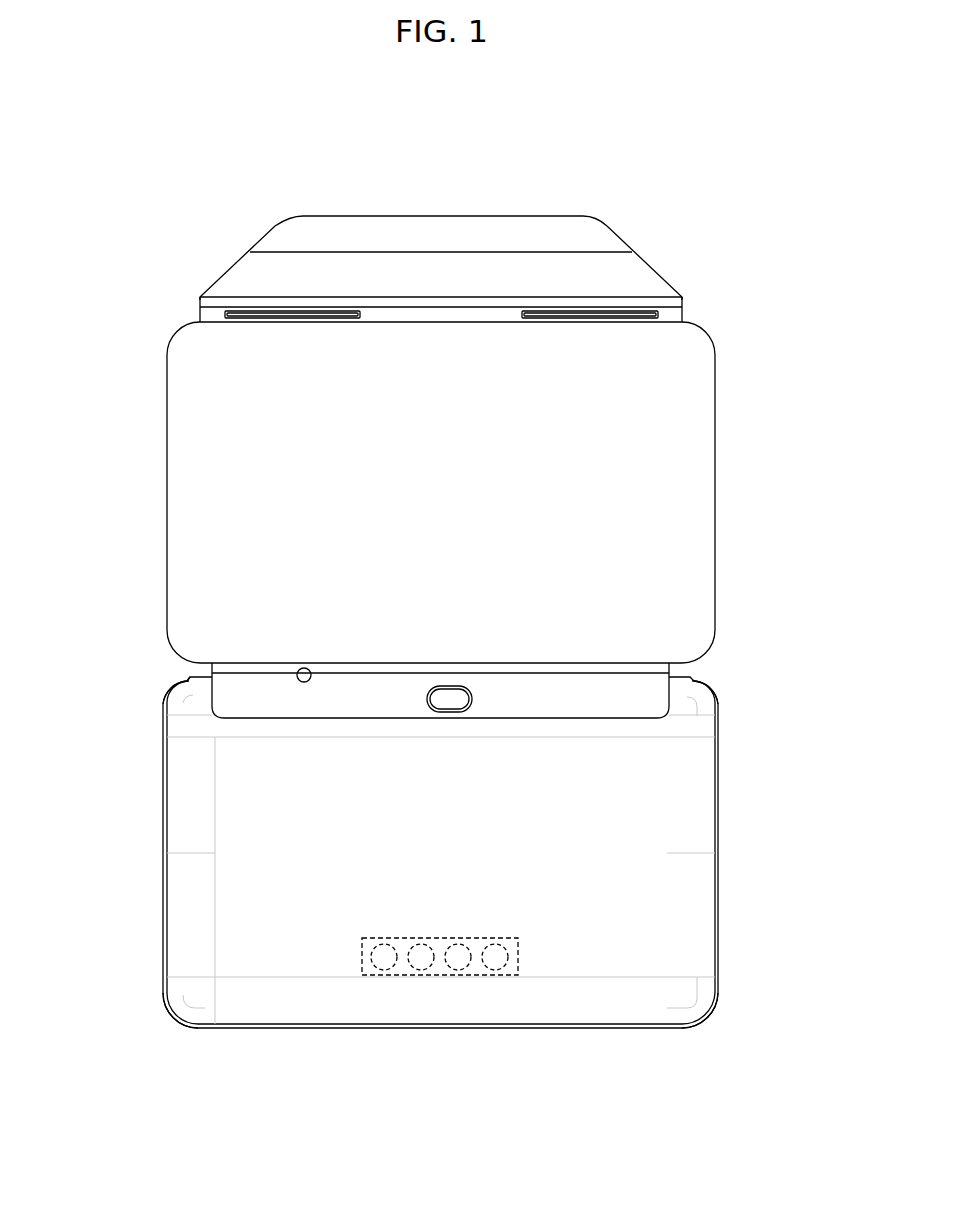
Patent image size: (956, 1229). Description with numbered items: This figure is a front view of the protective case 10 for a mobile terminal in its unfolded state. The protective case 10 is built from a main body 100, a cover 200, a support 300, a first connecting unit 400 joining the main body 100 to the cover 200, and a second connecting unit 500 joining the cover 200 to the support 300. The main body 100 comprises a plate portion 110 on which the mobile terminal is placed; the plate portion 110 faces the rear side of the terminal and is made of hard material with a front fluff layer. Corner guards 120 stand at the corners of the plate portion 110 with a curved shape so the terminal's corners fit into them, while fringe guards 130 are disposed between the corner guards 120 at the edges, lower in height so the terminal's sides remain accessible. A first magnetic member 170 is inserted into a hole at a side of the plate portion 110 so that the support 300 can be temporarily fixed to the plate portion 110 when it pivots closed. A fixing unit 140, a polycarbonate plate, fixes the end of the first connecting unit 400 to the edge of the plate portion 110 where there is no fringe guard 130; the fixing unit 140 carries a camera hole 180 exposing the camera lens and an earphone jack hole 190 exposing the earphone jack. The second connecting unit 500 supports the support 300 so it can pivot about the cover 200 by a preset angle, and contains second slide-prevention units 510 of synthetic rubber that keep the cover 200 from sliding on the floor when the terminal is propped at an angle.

The protective case 10 is at (563, 163).
The main body 100 is at (738, 777).
The plate portion 110 is at (637, 927).
The corner guards 120 is at (162, 682).
The fringe guards 130 is at (160, 843).
The fixing unit 140 is at (242, 700).
The first magnetic member 170 is at (527, 958).
The camera hole 180 is at (448, 683).
The earphone jack hole 190 is at (300, 665).
The cover 200 is at (725, 477).
The support 300 is at (643, 256).
The first connecting unit 400 is at (678, 668).
The second connecting unit 500 is at (688, 310).
The second slide-prevention units 510 is at (270, 313).